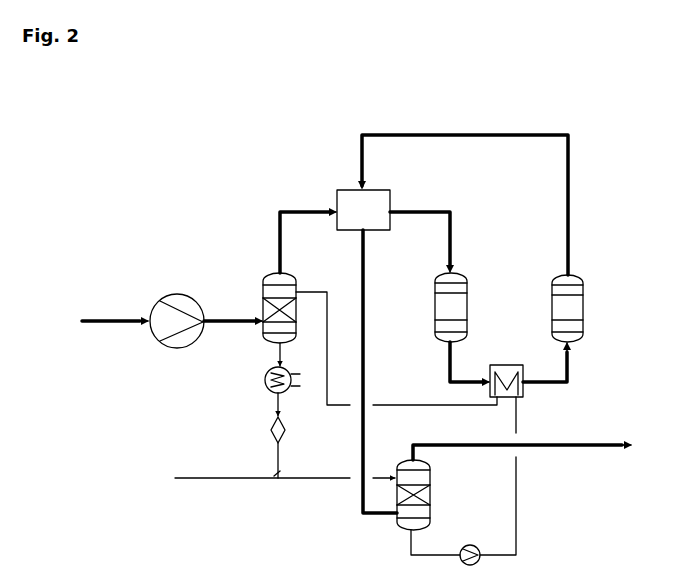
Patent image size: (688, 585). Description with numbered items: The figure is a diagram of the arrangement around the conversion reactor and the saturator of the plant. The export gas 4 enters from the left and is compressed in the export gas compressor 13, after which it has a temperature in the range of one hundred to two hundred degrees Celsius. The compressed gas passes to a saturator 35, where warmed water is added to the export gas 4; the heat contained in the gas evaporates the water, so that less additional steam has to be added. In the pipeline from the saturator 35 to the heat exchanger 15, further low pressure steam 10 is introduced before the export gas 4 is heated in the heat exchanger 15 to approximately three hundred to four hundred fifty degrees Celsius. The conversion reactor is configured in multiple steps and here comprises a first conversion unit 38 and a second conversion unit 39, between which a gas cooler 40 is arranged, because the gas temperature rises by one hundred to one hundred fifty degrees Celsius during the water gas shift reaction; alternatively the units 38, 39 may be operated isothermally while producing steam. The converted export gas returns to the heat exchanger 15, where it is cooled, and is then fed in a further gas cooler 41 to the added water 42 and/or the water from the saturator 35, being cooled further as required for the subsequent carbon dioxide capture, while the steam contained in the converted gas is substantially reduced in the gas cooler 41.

The low pressure steam 10 is at (420, 324).
The export gas 4 is at (125, 319).
The export gas compressor 13 is at (177, 294).
The saturator 35 is at (292, 276).
The heat exchanger 15 is at (378, 187).
The first conversion unit 38 is at (432, 300).
The second conversion unit 39 is at (548, 300).
The gas cooler 40 is at (509, 358).
The further gas cooler 41 is at (432, 486).
The added water 42 is at (228, 478).